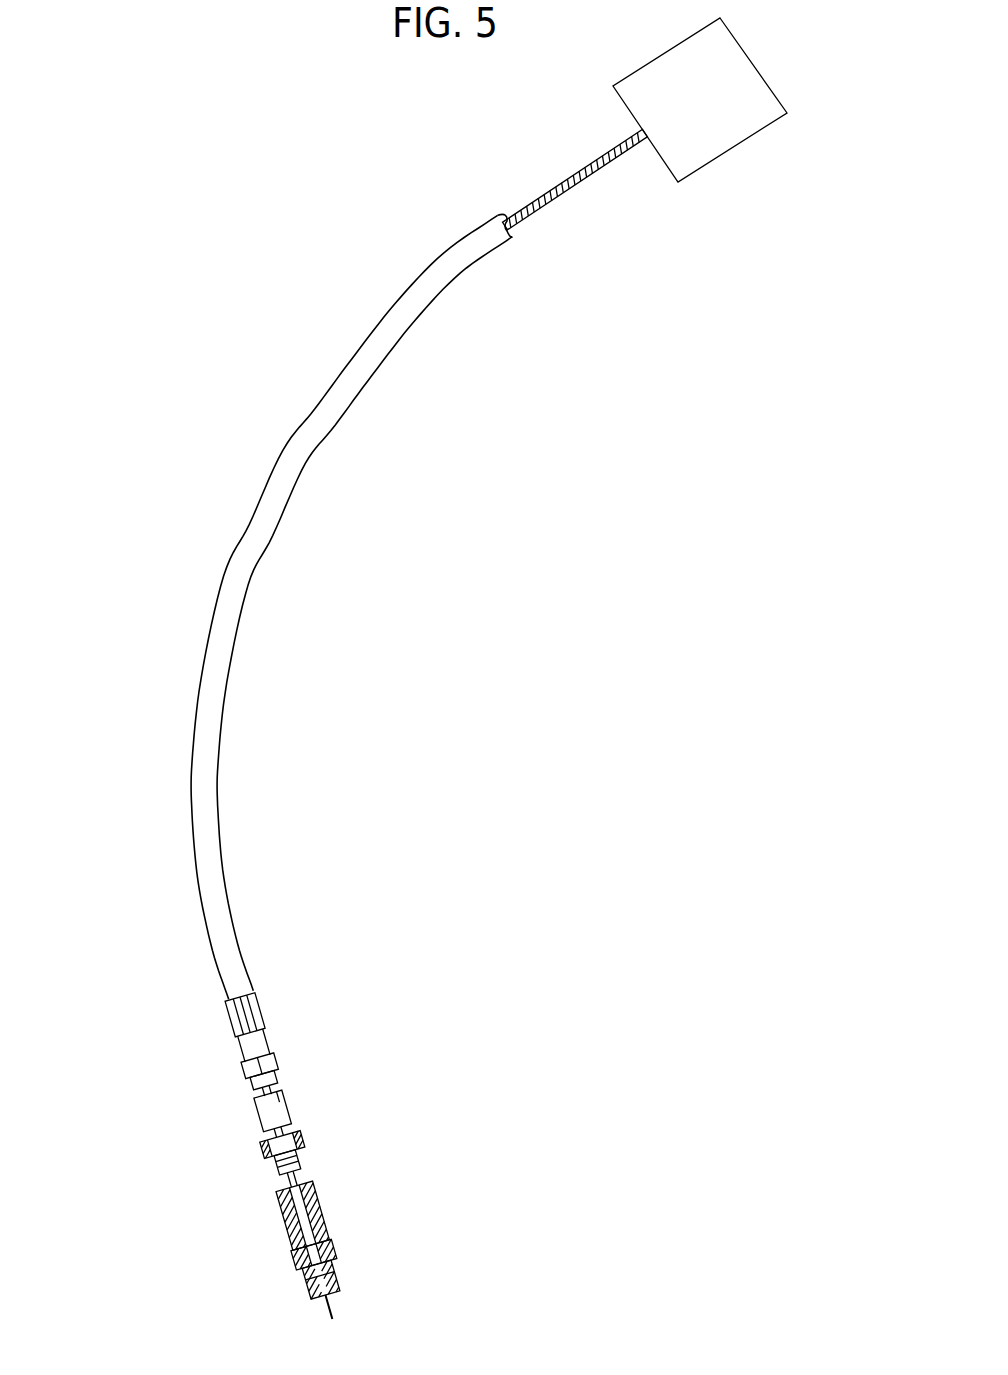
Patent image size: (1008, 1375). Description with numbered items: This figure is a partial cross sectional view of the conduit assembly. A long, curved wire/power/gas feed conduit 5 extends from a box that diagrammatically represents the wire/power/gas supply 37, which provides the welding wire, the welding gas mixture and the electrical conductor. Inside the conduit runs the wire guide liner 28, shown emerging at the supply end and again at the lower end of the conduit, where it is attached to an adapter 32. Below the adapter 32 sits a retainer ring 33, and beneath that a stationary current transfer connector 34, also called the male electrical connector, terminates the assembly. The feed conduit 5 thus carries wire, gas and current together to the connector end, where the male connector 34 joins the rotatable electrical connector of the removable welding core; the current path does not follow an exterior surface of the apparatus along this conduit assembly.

The wire/power/gas feed conduit 5 is at (312, 450).
The wire guide liner 28 is at (570, 193).
The adapter 32 is at (283, 1097).
The retainer ring 33 is at (300, 1143).
The stationary current transfer connector 34 is at (337, 1275).
The wire/power/gas supply 37 is at (738, 148).